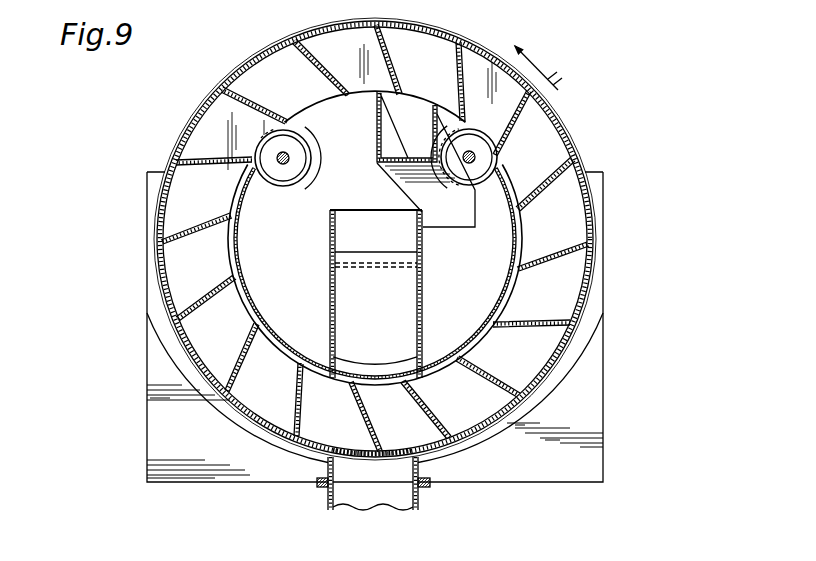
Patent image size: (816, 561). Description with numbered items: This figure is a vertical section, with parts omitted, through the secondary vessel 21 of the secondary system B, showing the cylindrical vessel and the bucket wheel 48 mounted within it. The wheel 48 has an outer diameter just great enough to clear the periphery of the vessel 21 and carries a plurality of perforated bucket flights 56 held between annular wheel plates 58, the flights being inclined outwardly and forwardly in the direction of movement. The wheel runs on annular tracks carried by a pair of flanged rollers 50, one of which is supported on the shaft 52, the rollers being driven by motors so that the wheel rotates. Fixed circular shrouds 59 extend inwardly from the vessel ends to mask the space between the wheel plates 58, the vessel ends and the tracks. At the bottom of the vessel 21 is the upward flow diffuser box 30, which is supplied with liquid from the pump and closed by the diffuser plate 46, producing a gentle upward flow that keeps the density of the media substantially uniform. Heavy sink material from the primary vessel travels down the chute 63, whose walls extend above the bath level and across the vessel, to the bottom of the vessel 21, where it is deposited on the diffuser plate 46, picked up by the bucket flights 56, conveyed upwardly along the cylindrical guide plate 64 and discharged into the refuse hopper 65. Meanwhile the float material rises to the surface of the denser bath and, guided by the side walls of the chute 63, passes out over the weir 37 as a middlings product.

The secondary system B is at (262, 55).
The secondary vessel 21 is at (568, 135).
The upward flow diffuser box 30 is at (420, 505).
The weir 37 is at (388, 252).
The diffuser plate 46 is at (378, 458).
The bucket wheel 48 is at (425, 57).
The flanged rollers 50 is at (306, 153).
The shaft 52 is at (284, 157).
The bucket flights 56 is at (386, 58).
The annular wheel plates 58 is at (347, 96).
The fixed circular shrouds 59 is at (237, 223).
The chute 63 is at (336, 298).
The cylindrical guide plate 64 is at (522, 250).
The refuse hopper 65 is at (409, 158).